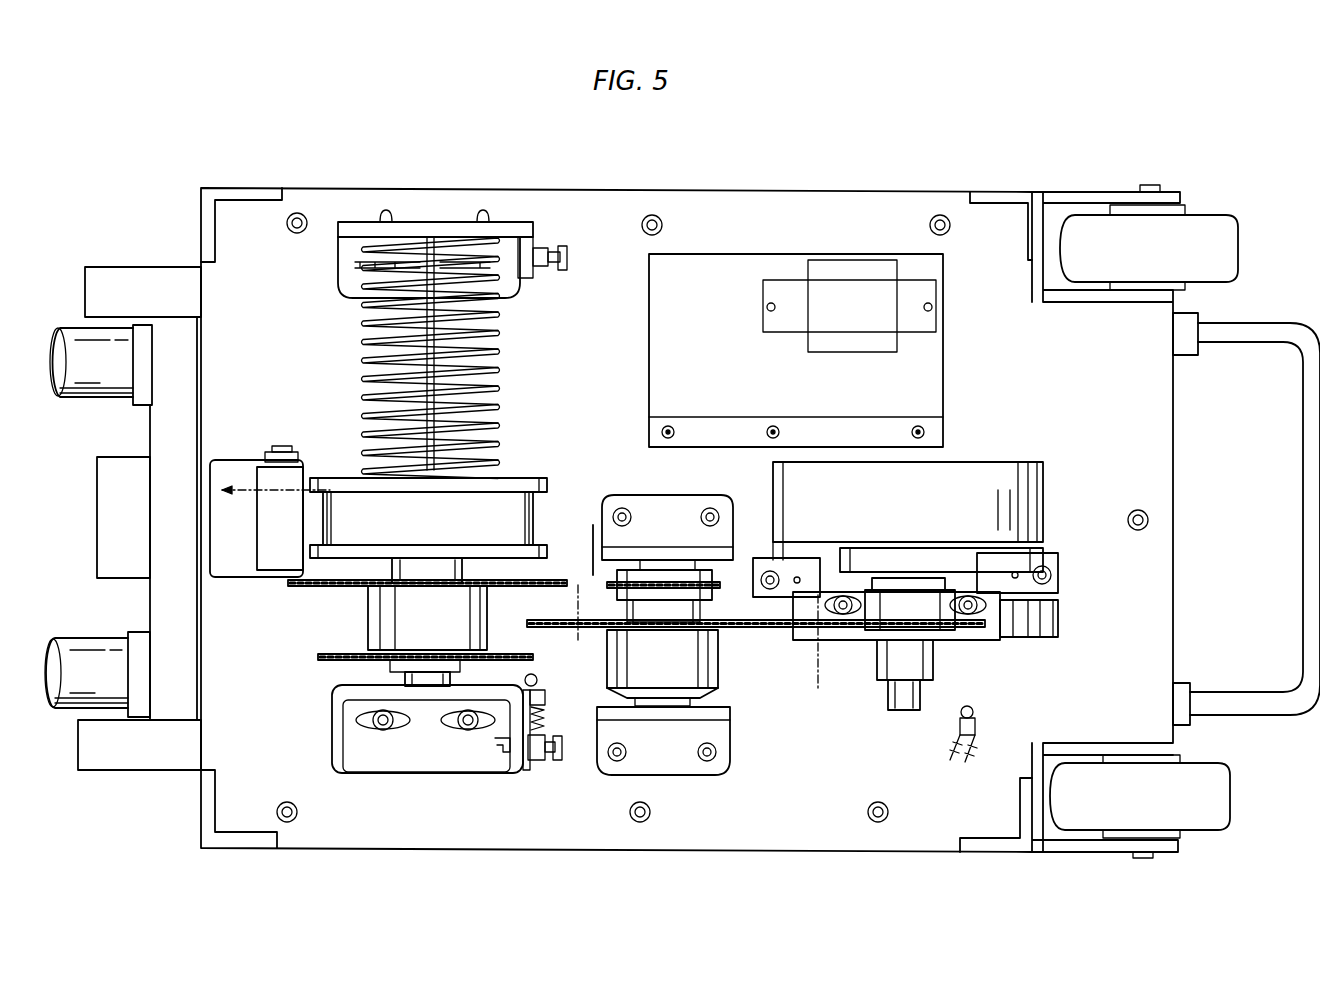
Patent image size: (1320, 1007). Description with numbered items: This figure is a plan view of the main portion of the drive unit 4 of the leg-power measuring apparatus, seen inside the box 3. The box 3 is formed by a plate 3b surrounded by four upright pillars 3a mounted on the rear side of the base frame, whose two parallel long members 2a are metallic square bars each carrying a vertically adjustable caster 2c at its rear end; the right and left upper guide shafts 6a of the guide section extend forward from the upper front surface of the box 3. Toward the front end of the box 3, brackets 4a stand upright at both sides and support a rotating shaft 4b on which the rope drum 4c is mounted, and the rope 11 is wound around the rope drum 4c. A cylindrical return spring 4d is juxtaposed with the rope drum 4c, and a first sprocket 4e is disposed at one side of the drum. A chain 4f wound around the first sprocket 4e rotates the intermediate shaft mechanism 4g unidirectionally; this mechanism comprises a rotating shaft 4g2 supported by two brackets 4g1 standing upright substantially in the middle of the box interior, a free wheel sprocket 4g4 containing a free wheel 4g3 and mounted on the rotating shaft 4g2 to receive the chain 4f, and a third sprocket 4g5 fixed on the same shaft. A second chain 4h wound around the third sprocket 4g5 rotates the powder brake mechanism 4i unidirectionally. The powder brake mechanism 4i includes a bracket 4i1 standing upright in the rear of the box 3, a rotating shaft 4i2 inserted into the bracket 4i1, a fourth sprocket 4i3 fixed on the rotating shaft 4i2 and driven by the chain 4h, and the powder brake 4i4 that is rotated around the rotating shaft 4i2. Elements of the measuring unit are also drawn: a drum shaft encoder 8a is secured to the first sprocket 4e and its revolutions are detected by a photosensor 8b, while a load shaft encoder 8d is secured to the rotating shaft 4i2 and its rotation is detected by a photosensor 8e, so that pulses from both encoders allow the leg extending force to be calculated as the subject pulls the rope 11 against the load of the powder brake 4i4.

The long member 2a is at (130, 267).
The caster 2c is at (1232, 252).
The box 3 is at (757, 190).
The pillar 3a is at (252, 200).
The plate 3b is at (752, 852).
The drive unit 4 is at (972, 450).
The bracket 4a is at (440, 222).
The rotating shaft 4b is at (400, 676).
The rope drum 4c is at (505, 505).
The return spring 4d is at (508, 305).
The first sprocket 4e is at (330, 588).
The chain 4f is at (576, 627).
The intermediate shaft mechanism 4g is at (725, 650).
The bracket 4g1 is at (640, 555).
The rotating shaft 4g2 is at (733, 710).
The free wheel 4g3 is at (710, 612).
The free wheel sprocket 4g4 is at (720, 588).
The third sprocket 4g5 is at (640, 680).
The chain 4h is at (854, 638).
The powder brake mechanism 4i is at (1050, 525).
The bracket 4i1 is at (1060, 620).
The rotating shaft 4i2 is at (905, 713).
The fourth sprocket 4i3 is at (965, 637).
The powder brake 4i4 is at (1018, 487).
The upper guide shaft 6a is at (98, 382).
The drum shaft encoder 8a is at (320, 656).
The photosensor 8b is at (545, 707).
The load shaft encoder 8d is at (975, 690).
The photosensor 8e is at (977, 722).
The rope 11 is at (240, 488).